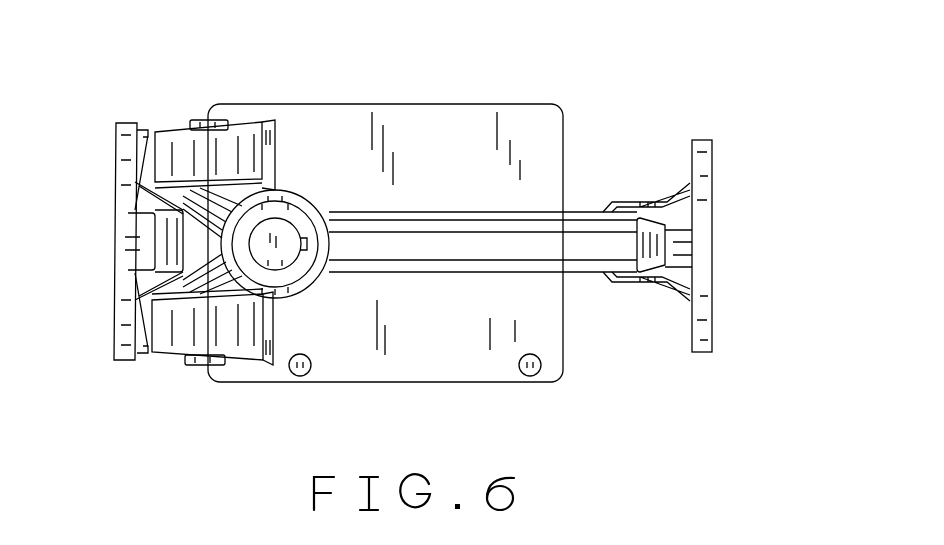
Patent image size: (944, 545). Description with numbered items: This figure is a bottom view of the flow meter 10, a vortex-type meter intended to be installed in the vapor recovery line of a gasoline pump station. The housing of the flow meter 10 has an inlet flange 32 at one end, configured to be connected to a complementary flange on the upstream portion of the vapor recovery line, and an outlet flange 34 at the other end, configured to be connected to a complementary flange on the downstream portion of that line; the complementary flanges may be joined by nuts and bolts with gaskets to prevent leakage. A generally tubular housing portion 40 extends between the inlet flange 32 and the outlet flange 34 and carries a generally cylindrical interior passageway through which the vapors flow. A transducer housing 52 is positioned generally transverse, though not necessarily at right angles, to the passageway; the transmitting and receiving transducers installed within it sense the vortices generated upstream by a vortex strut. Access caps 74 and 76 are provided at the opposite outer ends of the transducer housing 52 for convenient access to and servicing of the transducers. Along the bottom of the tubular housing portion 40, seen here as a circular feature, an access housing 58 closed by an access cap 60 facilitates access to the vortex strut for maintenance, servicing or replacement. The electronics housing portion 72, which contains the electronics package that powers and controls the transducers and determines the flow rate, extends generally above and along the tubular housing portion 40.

The flow meter 10 is at (438, 70).
The inlet flange 32 is at (718, 192).
The outlet flange 34 is at (108, 293).
The tubular housing portion 40 is at (582, 207).
The transducer housing 52 is at (222, 338).
The access housing 58 is at (294, 252).
The access cap 60 is at (265, 276).
The electronics housing portion 72 is at (267, 99).
The access cap 74 is at (191, 113).
The access cap 76 is at (178, 370).